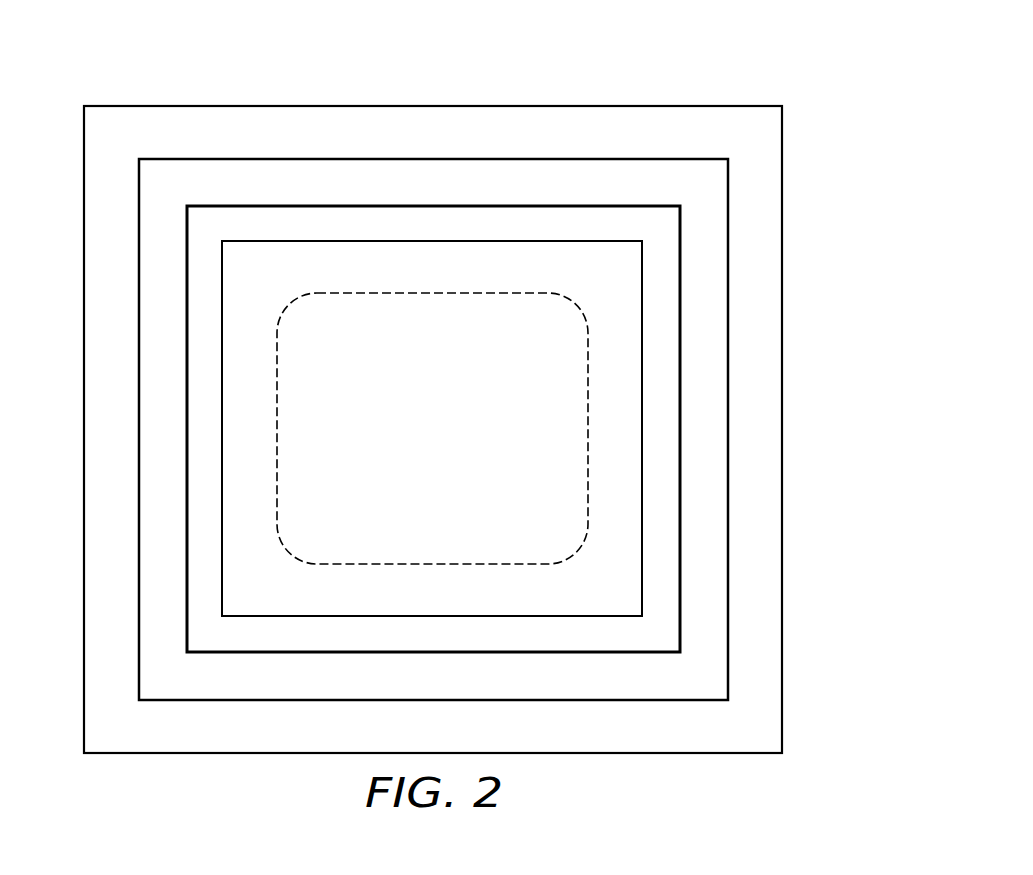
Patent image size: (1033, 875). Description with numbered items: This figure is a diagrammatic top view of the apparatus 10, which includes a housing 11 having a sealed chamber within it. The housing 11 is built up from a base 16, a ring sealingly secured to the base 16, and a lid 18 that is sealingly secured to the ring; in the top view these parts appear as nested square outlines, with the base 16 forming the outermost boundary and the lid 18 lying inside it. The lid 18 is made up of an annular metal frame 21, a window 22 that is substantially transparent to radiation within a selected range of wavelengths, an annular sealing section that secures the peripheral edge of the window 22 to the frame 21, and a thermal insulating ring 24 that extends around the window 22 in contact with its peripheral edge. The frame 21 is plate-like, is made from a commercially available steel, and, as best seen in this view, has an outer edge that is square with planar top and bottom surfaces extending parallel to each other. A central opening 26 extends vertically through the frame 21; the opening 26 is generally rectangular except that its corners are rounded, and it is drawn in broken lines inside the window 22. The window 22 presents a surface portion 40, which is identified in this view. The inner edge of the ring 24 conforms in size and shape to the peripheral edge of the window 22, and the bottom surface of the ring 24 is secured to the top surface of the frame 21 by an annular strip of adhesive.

The apparatus 10 is at (766, 68).
The housing 11 is at (728, 297).
The base 16 is at (93, 427).
The lid 18 is at (160, 332).
The annular metal frame 21 is at (718, 428).
The window 22 is at (276, 604).
The thermal insulating ring 24 is at (591, 625).
The central opening 26 is at (415, 562).
The surface portion 40 is at (615, 267).